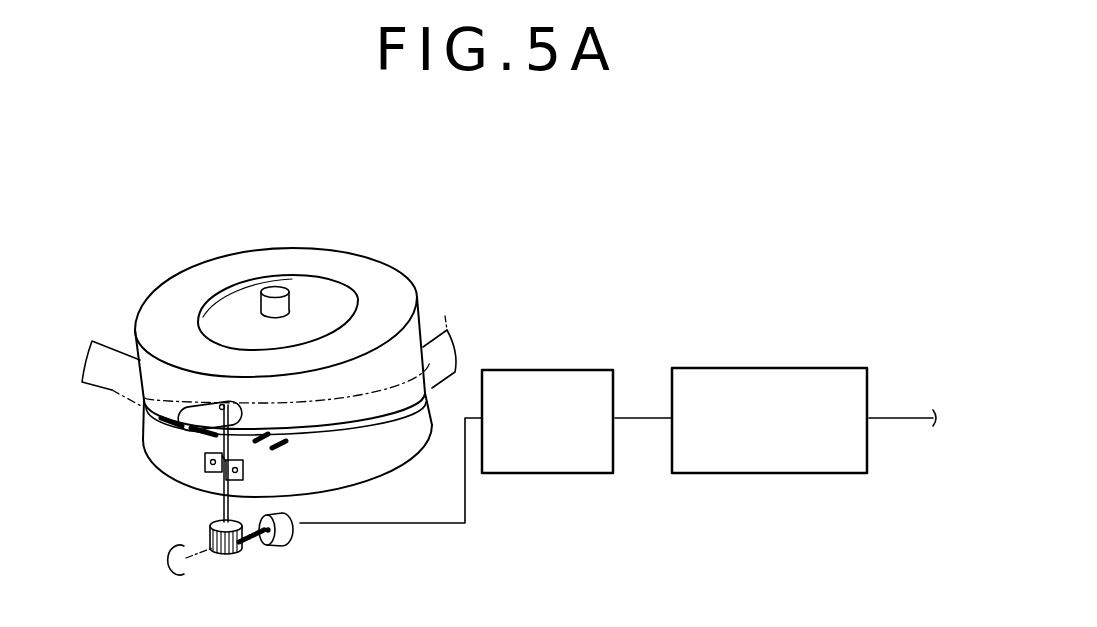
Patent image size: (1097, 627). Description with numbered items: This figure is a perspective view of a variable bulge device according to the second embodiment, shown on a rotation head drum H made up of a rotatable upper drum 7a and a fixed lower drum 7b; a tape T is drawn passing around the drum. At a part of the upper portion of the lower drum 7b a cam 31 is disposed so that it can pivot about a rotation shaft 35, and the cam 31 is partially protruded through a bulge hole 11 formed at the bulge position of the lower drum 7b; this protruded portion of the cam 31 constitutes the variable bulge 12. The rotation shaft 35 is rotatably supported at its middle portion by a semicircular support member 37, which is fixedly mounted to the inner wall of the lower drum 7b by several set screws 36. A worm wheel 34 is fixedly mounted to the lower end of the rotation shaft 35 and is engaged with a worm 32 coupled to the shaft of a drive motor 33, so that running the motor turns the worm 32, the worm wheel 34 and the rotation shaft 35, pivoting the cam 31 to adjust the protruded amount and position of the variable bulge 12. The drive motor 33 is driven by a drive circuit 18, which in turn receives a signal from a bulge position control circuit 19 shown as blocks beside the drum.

The upper drum 7a is at (413, 297).
The lower drum 7b is at (383, 460).
The bulge hole 11 is at (170, 423).
The variable bulge 12 is at (197, 421).
The drive circuit 18 is at (563, 370).
The bulge position control circuit 19 is at (757, 368).
The cam 31 is at (200, 424).
The worm 32 is at (255, 542).
The drive motor 33 is at (285, 535).
The worm wheel 34 is at (228, 553).
The rotation shaft 35 is at (223, 503).
The set screws 36 is at (281, 446).
The semicircular support member 37 is at (225, 460).
The rotation head drum H is at (180, 268).
The magnetic tape T is at (115, 350).